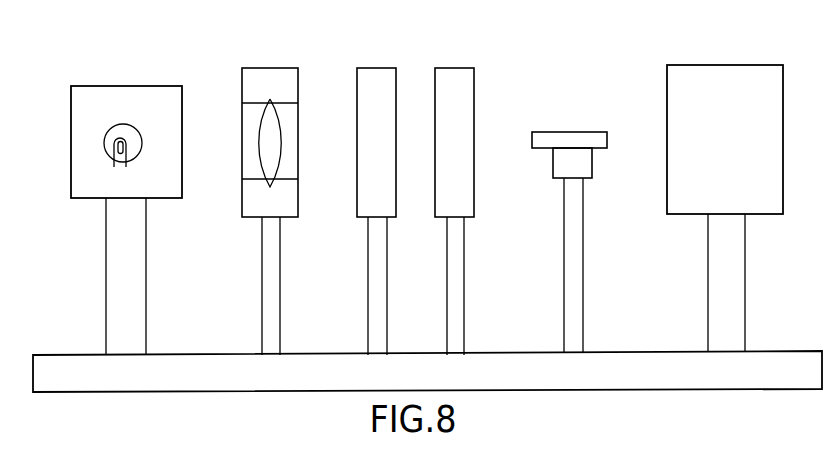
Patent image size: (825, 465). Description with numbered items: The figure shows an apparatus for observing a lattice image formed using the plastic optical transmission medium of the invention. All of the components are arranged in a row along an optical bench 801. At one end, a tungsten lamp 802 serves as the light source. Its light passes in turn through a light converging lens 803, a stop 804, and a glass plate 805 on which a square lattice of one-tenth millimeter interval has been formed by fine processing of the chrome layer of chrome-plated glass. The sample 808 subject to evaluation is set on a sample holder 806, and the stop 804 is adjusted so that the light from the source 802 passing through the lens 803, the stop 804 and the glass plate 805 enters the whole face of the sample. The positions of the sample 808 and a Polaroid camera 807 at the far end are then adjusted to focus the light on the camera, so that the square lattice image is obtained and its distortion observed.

The optical bench 801 is at (654, 351).
The tungsten lamp 802 is at (137, 85).
The light converging lens 803 is at (273, 67).
The stop 804 is at (378, 67).
The glass plate 805 is at (460, 67).
The sample holder 806 is at (552, 172).
The Polaroid camera 807 is at (718, 64).
The sample 808 is at (582, 131).